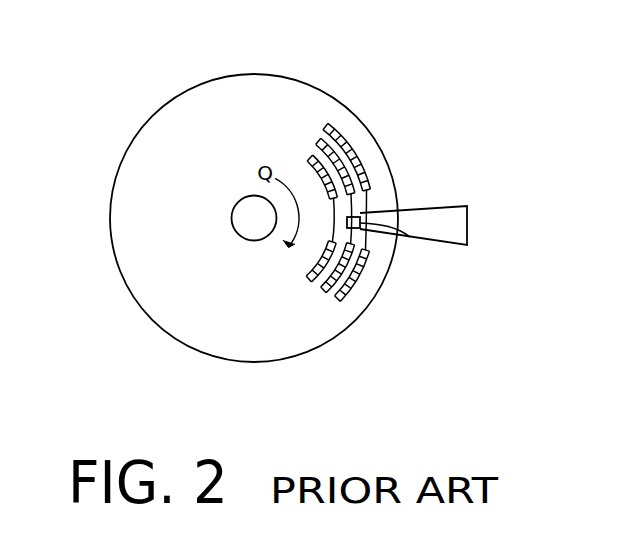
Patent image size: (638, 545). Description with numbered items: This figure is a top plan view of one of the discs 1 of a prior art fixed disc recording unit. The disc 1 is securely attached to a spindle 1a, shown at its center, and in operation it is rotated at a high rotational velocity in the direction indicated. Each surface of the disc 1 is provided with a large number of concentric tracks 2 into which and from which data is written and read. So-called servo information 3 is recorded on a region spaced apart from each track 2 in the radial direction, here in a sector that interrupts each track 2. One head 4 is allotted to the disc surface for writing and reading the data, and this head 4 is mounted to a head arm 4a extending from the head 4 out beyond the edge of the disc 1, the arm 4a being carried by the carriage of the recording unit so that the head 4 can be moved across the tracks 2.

The disc 1 is at (153, 117).
The spindle 1a is at (232, 227).
The concentric tracks 2 is at (347, 150).
The servo information 3 is at (367, 203).
The head 4 is at (402, 231).
The head arm 4a is at (461, 205).